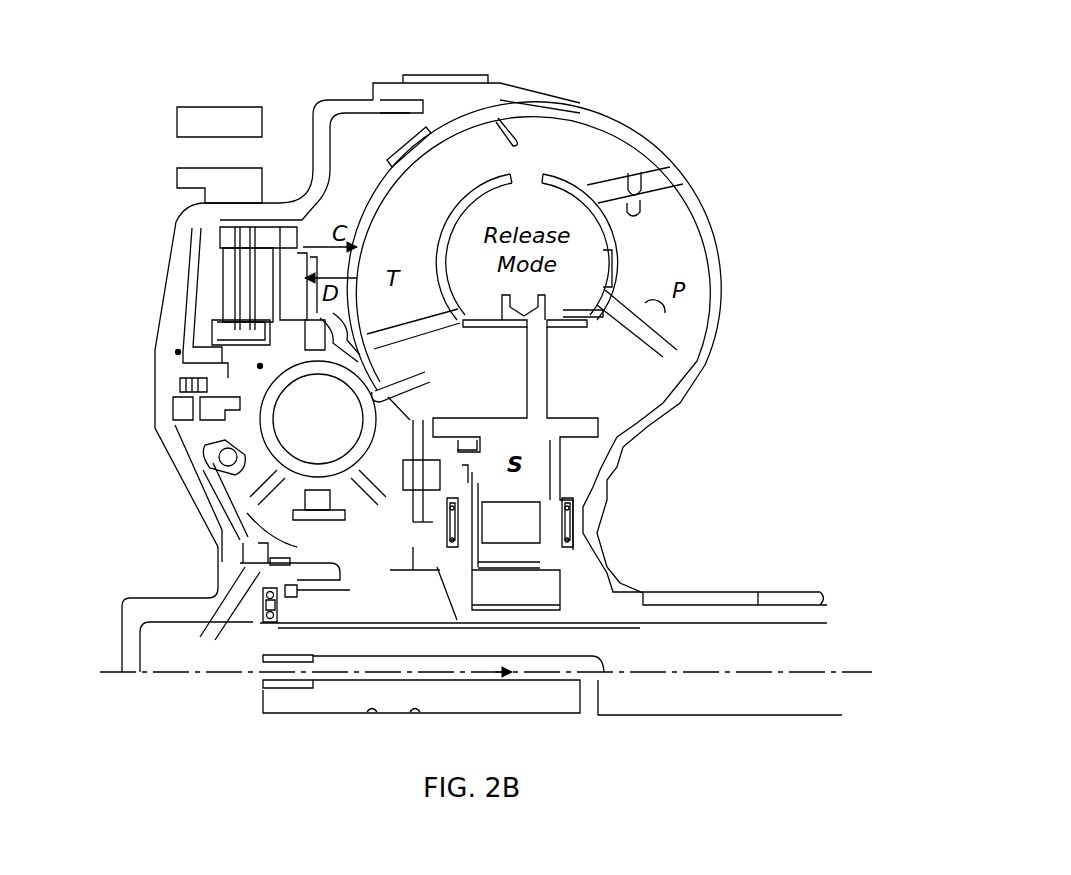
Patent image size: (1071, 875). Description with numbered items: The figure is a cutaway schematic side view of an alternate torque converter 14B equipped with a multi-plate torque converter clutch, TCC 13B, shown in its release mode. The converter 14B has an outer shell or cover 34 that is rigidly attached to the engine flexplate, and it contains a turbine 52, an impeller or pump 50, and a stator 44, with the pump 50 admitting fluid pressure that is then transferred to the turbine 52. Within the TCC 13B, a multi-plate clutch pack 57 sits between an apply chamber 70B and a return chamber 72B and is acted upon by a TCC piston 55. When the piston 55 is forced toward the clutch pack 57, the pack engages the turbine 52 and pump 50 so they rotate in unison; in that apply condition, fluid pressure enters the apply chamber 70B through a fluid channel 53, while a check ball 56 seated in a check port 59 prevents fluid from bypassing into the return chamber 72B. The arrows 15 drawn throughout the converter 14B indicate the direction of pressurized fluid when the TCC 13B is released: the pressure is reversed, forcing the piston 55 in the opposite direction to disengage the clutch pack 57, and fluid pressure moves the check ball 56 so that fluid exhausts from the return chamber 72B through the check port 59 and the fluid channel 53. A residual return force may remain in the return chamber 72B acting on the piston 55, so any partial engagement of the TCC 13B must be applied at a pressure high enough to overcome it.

The converter 14B is at (760, 97).
The turbine 52 is at (462, 165).
The outer shell or cover 34 is at (683, 192).
The pump 50 is at (684, 314).
The arrows 15 is at (390, 137).
The multi-plate clutch pack 57 is at (237, 270).
The return chamber 72B is at (260, 366).
The TCC piston 55 is at (190, 347).
The apply chamber 70B is at (177, 352).
The multi-plate torque converter clutch (TCC) 13B is at (198, 383).
The check ball 56 is at (213, 468).
The check port 59 is at (228, 457).
The fluid channel 53 is at (244, 608).
The stator 44 is at (537, 480).